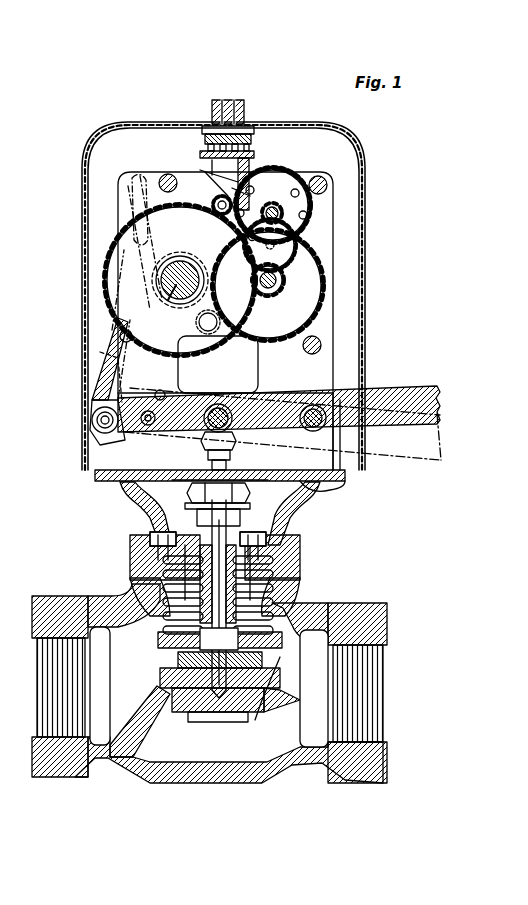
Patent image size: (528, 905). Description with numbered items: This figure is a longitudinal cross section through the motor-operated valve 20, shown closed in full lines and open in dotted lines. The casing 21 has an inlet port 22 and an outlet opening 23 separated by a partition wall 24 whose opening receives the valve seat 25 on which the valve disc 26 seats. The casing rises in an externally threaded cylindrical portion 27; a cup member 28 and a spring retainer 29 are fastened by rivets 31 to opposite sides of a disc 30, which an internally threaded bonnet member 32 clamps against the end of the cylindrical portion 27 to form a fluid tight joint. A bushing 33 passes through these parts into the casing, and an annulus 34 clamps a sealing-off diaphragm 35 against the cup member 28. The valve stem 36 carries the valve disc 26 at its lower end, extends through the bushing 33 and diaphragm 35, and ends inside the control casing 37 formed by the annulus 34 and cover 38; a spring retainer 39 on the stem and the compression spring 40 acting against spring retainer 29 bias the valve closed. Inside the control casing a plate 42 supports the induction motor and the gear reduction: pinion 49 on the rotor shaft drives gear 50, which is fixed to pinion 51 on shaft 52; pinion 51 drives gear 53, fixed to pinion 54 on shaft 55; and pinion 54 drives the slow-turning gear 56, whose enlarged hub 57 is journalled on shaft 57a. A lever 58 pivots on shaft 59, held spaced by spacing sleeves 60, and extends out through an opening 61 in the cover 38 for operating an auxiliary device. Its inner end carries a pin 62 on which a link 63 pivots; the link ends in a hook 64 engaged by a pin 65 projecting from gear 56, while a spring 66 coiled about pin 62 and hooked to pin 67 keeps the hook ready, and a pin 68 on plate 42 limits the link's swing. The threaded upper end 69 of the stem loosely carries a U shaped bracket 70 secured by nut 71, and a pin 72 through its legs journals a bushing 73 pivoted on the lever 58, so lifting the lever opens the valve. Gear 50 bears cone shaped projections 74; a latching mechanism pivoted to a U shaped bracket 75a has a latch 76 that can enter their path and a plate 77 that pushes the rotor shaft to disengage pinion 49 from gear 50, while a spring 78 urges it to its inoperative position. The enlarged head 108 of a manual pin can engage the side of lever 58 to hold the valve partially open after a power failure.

The valve 20 is at (218, 677).
The casing 21 is at (385, 773).
The inlet port 22 is at (384, 670).
The outlet opening 23 is at (48, 690).
The partition wall 24 is at (140, 740).
The valve seat 25 is at (262, 714).
The valve disc 26 is at (160, 676).
The cylindrical portion 27 is at (140, 592).
The cup member 28 is at (290, 512).
The spring retainer 29 is at (300, 556).
The disc 30 is at (150, 541).
The rivets 31 is at (158, 522).
The bonnet member 32 is at (140, 555).
The bushing 33 is at (160, 570).
The annulus 34 is at (340, 486).
The sealing-off diaphragm 35 is at (150, 504).
The valve stem 36 is at (218, 712).
The control casing 37 is at (362, 322).
The cover 38 is at (368, 278).
The spring retainer 39 is at (158, 638).
The compression spring 40 is at (270, 590).
The plate 42 is at (118, 200).
The pinion 49 is at (215, 200).
The gear 50 is at (308, 178).
The pinion 51 is at (282, 185).
The shaft 52 is at (282, 210).
The gear 53 is at (316, 262).
The pinion 54 is at (278, 283).
The shaft 55 is at (275, 272).
The gear 56 is at (105, 268).
The hub 57 is at (183, 270).
The shaft 57a is at (172, 300).
The lever 58 is at (412, 390).
The shaft 59 is at (312, 404).
The spacing sleeves 60 is at (336, 398).
The opening 61 is at (360, 392).
The pin 62 is at (100, 420).
The link 63 is at (112, 318).
The hook 64 is at (133, 325).
The pin 65 is at (152, 240).
The spring 66 is at (110, 380).
The pin 67 is at (147, 426).
The pin 68 is at (120, 336).
The threaded portion 69 is at (248, 490).
The U shaped bracket 70 is at (222, 396).
The nut 71 is at (228, 456).
The pin 72 is at (230, 400).
The bushing 73 is at (232, 414).
The cone shaped projections 74 is at (272, 180).
The U shaped bracket 75a is at (252, 135).
The latch 76 is at (252, 190).
The plate 77 is at (212, 172).
The spring 78 is at (240, 130).
The enlarged head 108 is at (162, 390).